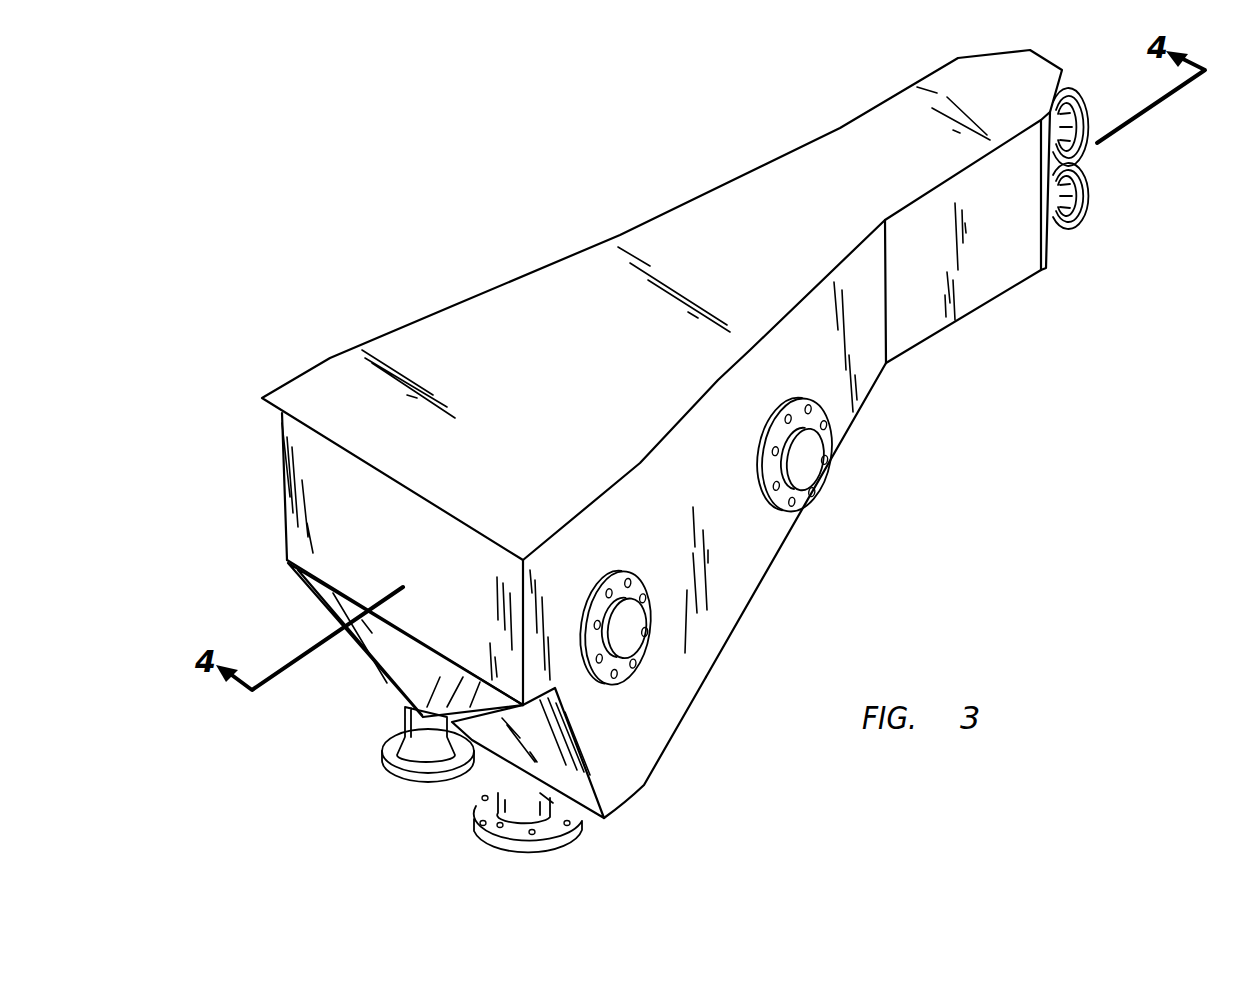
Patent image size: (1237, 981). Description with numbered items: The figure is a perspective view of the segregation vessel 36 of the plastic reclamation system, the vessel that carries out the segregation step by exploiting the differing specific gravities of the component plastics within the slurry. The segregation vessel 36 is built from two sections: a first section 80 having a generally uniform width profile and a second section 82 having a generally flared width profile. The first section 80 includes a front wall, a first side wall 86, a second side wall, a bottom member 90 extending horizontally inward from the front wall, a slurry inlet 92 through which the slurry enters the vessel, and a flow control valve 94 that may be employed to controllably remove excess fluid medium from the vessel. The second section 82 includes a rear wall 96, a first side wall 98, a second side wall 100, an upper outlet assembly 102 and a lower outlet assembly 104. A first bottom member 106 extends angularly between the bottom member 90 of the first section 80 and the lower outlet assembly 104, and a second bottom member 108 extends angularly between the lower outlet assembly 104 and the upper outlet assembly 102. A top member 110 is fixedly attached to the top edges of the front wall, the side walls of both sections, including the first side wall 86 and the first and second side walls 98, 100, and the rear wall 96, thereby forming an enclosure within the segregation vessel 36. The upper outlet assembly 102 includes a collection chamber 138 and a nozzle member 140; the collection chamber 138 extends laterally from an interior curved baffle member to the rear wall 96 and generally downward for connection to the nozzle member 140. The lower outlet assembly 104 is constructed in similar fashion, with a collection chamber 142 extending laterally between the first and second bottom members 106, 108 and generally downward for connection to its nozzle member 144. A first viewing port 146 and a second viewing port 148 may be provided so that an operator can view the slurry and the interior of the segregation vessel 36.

The segregation vessel 36 is at (503, 151).
The first section 80 is at (986, 368).
The second section 82 is at (794, 616).
The first side wall 86 is at (992, 292).
The bottom member 90 is at (905, 352).
The slurry inlet 92 is at (1090, 223).
The flow control valve 94 is at (1081, 101).
The rear wall 96 is at (307, 493).
The first side wall 98 is at (692, 683).
The second side wall 100 is at (280, 442).
The upper outlet assembly 102 is at (347, 757).
The lower outlet assembly 104 is at (452, 809).
The first bottom member 106 is at (802, 514).
The second bottom member 108 is at (577, 772).
The top member 110 is at (793, 168).
The collection chamber 138 is at (397, 682).
The nozzle member 140 is at (397, 778).
The collection chamber 142 is at (551, 803).
The nozzle member 144 is at (490, 838).
The first viewing port 146 is at (610, 592).
The second viewing port 148 is at (779, 424).